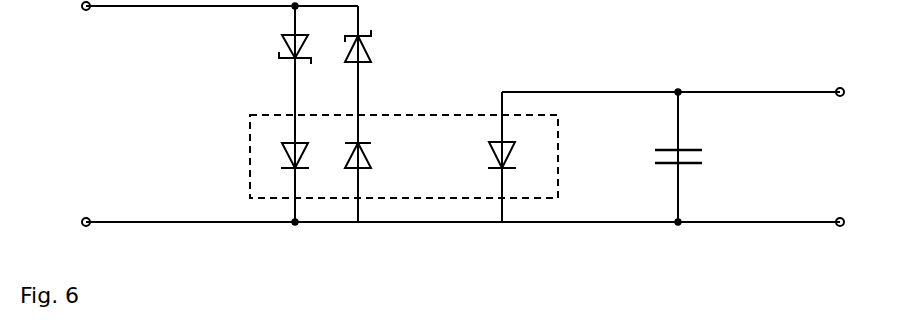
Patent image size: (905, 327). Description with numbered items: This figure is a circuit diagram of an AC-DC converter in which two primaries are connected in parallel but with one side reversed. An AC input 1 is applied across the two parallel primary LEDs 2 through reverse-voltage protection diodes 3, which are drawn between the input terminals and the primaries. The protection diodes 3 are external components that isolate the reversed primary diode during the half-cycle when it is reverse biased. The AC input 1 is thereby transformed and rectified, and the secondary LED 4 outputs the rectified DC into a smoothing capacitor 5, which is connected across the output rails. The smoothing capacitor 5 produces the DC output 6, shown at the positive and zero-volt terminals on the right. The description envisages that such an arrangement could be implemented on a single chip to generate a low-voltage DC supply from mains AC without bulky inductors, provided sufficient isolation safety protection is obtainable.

The AC input 1 is at (83, 114).
The primary LEDs 2 is at (326, 156).
The reverse-voltage protection diodes 3 is at (325, 47).
The secondary LED 4 is at (516, 156).
The smoothing capacitor 5 is at (694, 160).
The DC output 6 is at (831, 142).